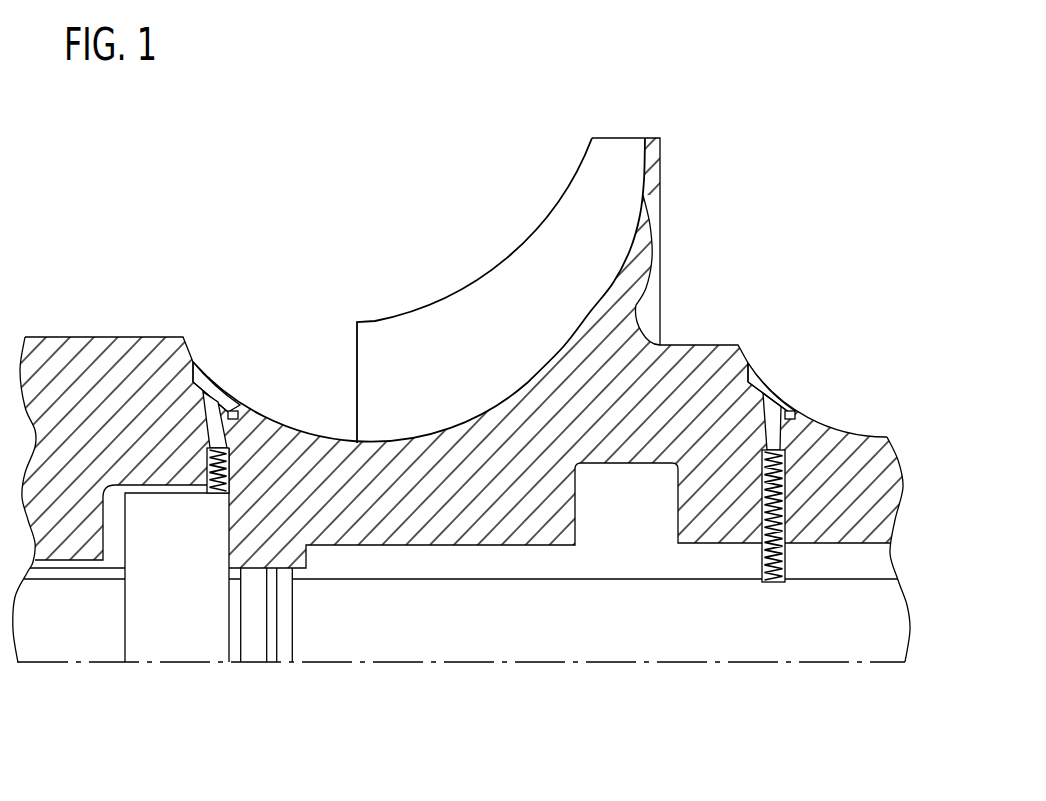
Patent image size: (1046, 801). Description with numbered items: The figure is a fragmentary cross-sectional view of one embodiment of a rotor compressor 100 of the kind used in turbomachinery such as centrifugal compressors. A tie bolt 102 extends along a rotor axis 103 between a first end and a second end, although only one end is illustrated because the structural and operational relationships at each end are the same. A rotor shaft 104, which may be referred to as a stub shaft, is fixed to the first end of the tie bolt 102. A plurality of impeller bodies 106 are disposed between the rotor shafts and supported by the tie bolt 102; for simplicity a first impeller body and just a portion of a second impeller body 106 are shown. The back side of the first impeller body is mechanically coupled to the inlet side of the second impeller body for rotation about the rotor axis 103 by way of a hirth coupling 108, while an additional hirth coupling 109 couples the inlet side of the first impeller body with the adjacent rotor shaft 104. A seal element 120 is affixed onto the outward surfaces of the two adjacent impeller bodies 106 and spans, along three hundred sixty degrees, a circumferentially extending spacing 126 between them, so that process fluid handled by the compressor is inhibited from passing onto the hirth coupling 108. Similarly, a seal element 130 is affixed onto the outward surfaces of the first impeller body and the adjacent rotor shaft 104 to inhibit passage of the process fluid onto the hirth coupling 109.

The rotor compressor 100 is at (710, 97).
The tie bolt 102 is at (655, 632).
The rotor axis 103 is at (402, 665).
The rotor shaft 104 is at (101, 352).
The impeller body 106 is at (855, 399).
The hirth coupling 108 is at (815, 458).
The hirth coupling 109 is at (453, 419).
The seal element 120 is at (770, 392).
The circumferentially extending spacing 126 is at (217, 432).
The seal element 130 is at (217, 397).